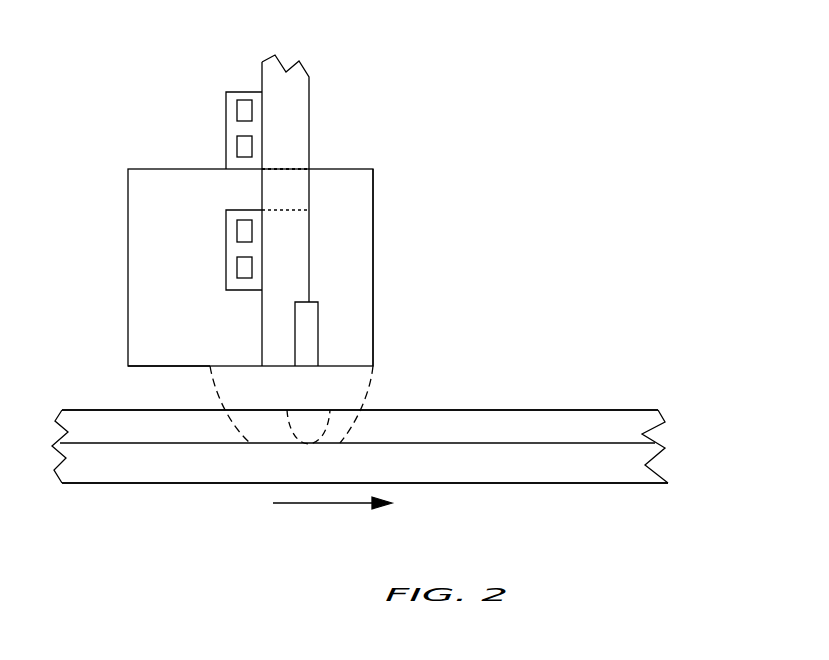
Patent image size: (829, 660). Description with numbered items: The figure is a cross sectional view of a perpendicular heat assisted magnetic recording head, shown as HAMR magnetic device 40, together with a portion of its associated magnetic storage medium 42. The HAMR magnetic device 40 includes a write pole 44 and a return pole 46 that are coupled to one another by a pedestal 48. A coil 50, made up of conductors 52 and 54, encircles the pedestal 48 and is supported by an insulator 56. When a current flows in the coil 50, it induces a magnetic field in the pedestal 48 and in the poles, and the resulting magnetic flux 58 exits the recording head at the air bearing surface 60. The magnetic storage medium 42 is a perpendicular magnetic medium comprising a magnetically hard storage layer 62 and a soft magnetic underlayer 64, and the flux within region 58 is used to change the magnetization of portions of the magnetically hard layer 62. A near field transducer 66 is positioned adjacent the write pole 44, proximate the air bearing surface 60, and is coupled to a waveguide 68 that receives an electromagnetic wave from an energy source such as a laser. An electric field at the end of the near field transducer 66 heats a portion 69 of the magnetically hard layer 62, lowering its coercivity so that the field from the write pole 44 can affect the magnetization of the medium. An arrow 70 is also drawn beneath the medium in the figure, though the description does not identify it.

The HAMR magnetic device 40 is at (478, 90).
The magnetic storage medium 42 is at (670, 380).
The write pole 44 is at (348, 215).
The return pole 46 is at (153, 300).
The pedestal 48 is at (290, 190).
The coil 50 is at (210, 75).
The conductor 52 is at (237, 268).
The conductor 54 is at (237, 147).
The insulator 56 is at (236, 92).
The magnetic flux 58 is at (372, 396).
The air bearing surface 60 is at (148, 366).
The magnetically hard storage layer 62 is at (615, 432).
The soft magnetic underlayer 64 is at (610, 460).
The near field transducer 66 is at (312, 327).
The waveguide 68 is at (282, 128).
The heated portion 69 is at (300, 442).
The travel direction 70 is at (330, 503).